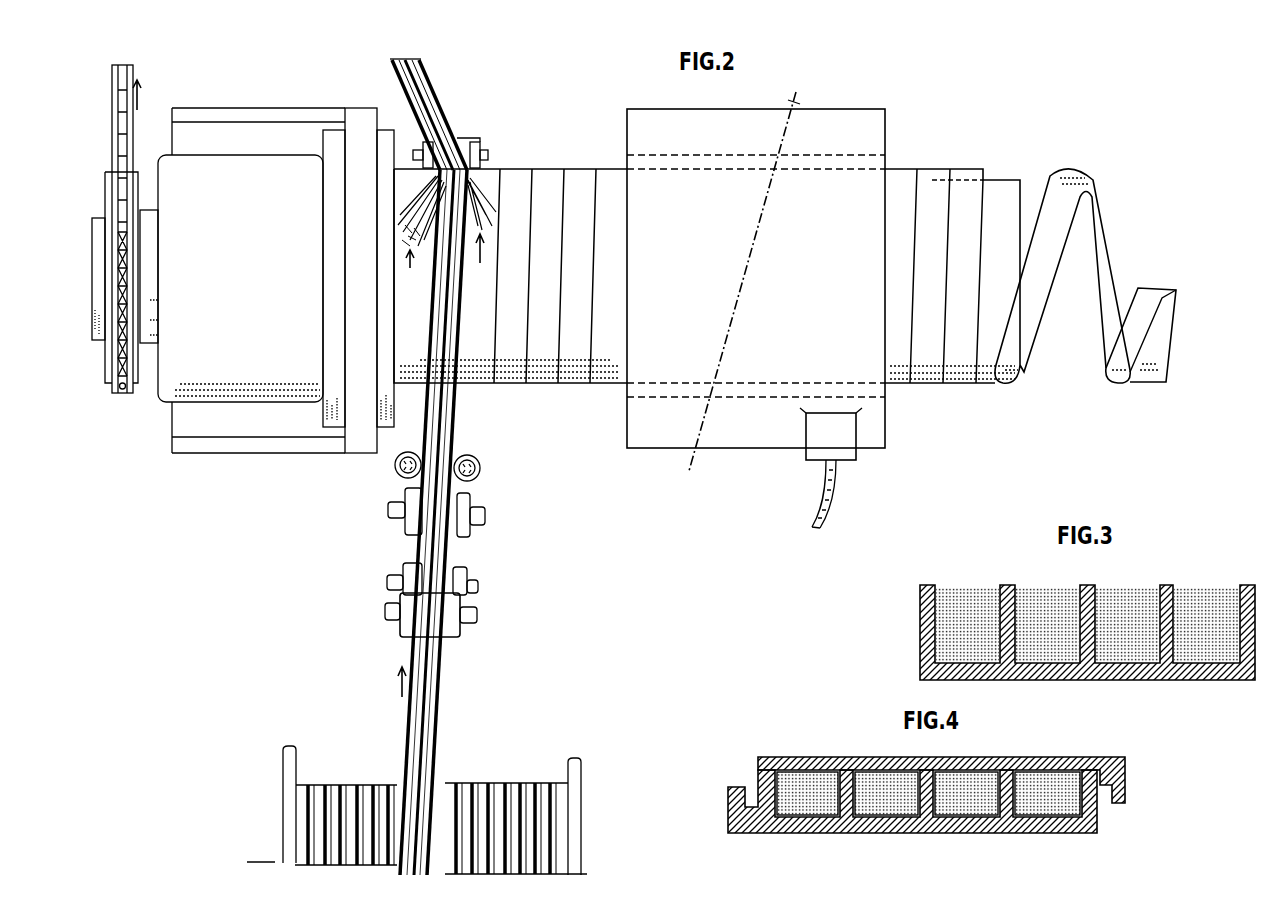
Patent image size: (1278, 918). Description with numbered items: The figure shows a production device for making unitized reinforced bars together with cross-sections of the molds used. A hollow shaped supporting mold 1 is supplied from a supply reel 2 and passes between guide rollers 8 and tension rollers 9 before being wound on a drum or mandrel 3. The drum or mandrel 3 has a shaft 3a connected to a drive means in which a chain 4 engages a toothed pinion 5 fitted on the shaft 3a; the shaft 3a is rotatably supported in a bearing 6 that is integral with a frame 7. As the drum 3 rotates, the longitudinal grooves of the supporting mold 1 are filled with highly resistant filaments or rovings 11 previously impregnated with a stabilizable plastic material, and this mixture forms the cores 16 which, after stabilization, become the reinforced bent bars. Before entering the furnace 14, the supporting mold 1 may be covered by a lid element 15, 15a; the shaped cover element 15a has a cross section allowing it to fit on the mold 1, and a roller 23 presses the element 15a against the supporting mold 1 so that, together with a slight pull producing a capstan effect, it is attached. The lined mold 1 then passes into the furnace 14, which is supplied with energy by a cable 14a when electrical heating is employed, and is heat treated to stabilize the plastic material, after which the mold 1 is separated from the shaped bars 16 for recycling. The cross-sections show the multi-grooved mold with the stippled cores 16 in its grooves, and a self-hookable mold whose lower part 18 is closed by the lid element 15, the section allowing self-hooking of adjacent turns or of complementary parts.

In FIG. 2, the shaped supporting mold 1 is at (468, 428).
In FIG. 2, the supply reel 2 is at (276, 723).
In FIG. 2, the drum or mandrel 3 is at (1001, 192).
In FIG. 2, the shaft 3a is at (92, 338).
In FIG. 2, the chain 4 is at (112, 101).
In FIG. 2, the toothed pinion 5 is at (106, 185).
In FIG. 2, the bearing 6 is at (238, 176).
In FIG. 2, the frame 7 is at (358, 120).
In FIG. 2, the guide rollers 8 is at (473, 492).
In FIG. 2, the tension rollers 9 is at (448, 605).
In FIG. 2, the filaments or rovings 11 is at (447, 243).
In FIG. 2, the furnace 14 is at (711, 430).
In FIG. 2, the cable 14a is at (828, 496).
In FIG. 4, the lid element 15 is at (1063, 758).
In FIG. 2, the shaped cover element 15a is at (425, 91).
In FIG. 3, the shaped bars or cores 16 is at (968, 600).
In FIG. 4, the lower part 18 is at (1097, 795).
In FIG. 2, the roller 23 is at (476, 140).